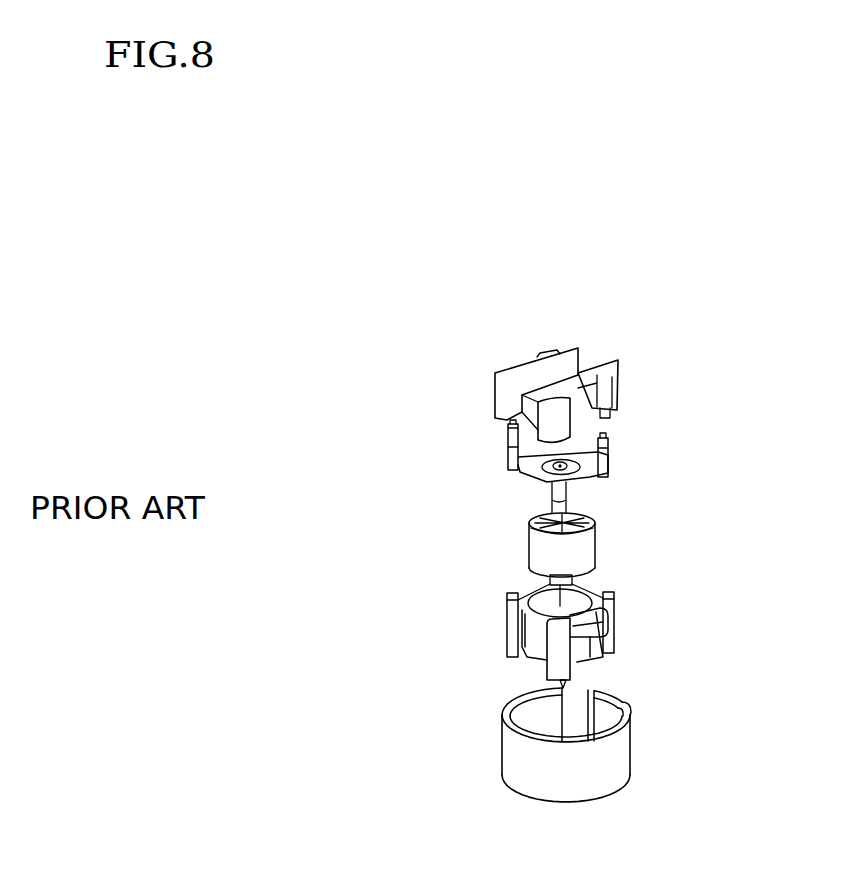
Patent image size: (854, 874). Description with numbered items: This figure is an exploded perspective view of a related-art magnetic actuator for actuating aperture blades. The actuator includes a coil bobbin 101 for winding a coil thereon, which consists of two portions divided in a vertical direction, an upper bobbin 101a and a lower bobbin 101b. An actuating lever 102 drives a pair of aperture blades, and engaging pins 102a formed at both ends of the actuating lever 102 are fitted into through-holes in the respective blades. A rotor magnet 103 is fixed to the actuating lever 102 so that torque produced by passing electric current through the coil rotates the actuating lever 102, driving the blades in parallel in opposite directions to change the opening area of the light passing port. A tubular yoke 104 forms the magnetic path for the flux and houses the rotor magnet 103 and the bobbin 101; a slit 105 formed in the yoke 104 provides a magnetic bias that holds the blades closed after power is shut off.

The coil bobbin 101 is at (367, 433).
The upper bobbin 101a is at (549, 347).
The lower bobbin 101b is at (513, 657).
The actuating lever 102 is at (500, 495).
The engaging pins 102a is at (510, 431).
The rotor magnet 103 is at (634, 529).
The tubular yoke 104 is at (498, 760).
The slot 105 is at (603, 700).